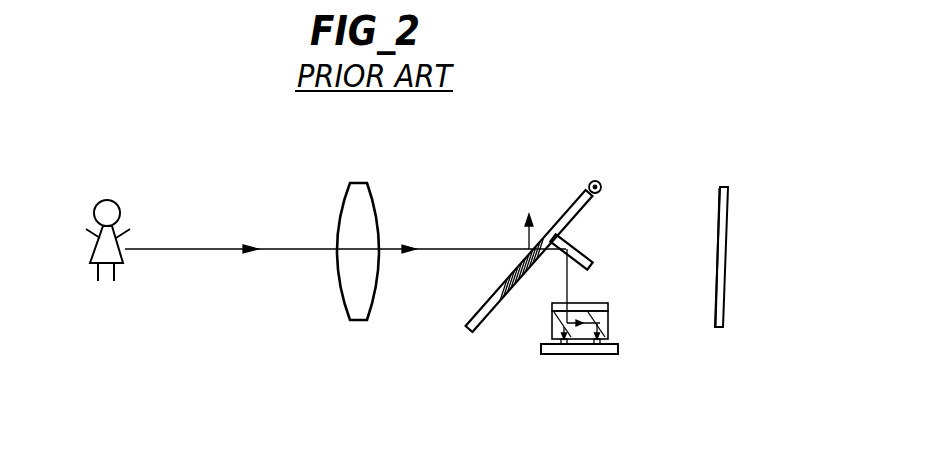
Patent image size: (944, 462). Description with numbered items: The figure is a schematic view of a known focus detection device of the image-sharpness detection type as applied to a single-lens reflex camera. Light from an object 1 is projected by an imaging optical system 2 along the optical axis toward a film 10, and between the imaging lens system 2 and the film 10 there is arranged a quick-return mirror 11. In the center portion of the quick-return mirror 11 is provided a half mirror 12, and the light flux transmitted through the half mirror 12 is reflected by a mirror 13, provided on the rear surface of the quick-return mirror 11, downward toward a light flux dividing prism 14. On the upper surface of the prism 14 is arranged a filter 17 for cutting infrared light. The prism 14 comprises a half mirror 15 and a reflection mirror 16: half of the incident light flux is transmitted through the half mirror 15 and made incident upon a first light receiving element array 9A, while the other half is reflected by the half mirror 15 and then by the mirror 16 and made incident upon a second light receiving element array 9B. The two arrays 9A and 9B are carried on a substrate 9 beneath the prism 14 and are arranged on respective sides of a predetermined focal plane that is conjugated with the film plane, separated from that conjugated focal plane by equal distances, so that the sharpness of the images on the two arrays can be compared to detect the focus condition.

The object 1 is at (118, 197).
The imaging optical system 2 is at (373, 194).
The substrate 9 is at (543, 355).
The first light receiving element array 9A is at (569, 355).
The second light receiving element array 9B is at (603, 355).
The film 10 is at (728, 196).
The quick-return mirror 11 is at (478, 312).
The half mirror 12 is at (542, 233).
The mirror 13 is at (593, 266).
The light flux dividing prism 14 is at (610, 320).
The half mirror 15 is at (551, 322).
The reflection mirror 16 is at (609, 334).
The filter 17 is at (602, 303).